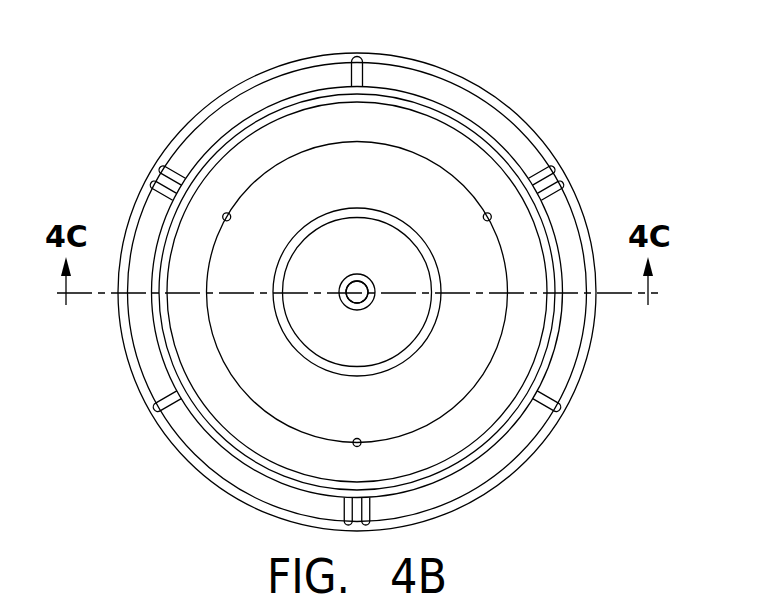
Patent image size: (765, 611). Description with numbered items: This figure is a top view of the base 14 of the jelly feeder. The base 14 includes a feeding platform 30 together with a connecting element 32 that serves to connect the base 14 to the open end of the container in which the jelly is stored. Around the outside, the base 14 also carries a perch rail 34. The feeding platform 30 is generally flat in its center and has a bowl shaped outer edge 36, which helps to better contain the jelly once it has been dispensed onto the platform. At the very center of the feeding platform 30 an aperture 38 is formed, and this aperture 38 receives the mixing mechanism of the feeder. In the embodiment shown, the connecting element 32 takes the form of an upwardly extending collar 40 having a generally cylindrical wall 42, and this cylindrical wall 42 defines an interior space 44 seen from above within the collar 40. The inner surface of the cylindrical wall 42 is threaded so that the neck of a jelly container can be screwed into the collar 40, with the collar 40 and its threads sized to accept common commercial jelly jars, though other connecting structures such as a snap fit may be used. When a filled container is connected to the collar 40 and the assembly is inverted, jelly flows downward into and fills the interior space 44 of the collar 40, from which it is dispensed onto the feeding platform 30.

The base 14 is at (567, 90).
The feeding platform 30 is at (480, 320).
The connecting element 32 is at (377, 190).
The perch rail 34 is at (170, 142).
The bowl shaped outer edge 36 is at (527, 242).
The aperture 38 is at (355, 298).
The collar 40 is at (277, 303).
The cylindrical wall 42 is at (323, 247).
The interior space 44 is at (384, 264).